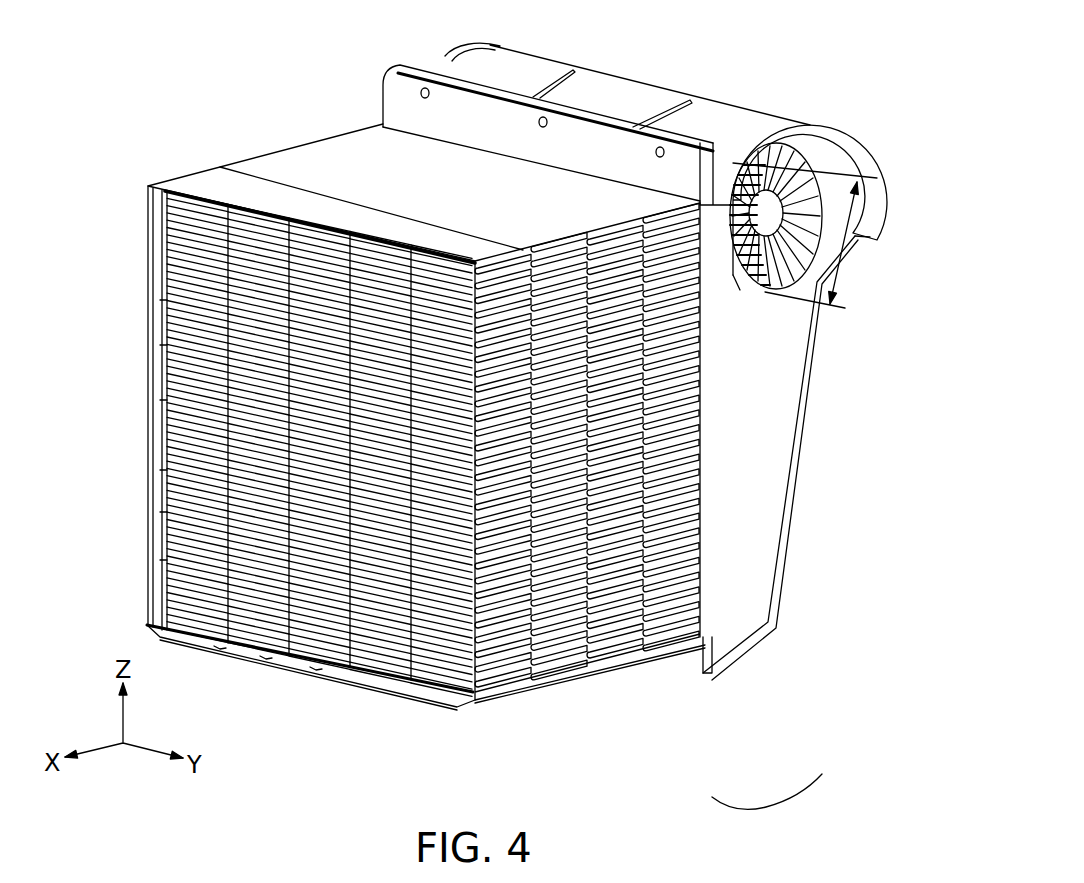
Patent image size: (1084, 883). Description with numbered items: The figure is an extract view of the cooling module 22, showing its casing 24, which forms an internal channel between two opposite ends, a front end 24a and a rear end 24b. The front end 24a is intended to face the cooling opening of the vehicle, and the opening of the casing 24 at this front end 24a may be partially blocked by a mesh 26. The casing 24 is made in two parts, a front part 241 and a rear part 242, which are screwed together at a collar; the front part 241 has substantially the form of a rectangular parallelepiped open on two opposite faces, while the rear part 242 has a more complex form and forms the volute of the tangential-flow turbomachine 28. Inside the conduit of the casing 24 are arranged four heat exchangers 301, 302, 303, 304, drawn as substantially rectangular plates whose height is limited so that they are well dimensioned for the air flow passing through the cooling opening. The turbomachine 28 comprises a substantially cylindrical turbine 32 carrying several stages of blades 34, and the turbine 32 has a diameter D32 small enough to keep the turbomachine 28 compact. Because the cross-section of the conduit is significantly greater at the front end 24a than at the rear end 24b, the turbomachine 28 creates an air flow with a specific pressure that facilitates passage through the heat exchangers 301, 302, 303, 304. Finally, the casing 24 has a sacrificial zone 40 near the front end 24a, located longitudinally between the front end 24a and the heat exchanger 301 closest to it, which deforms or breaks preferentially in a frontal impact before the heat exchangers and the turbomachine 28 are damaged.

The cooling module 22 is at (255, 110).
The sacrificial zone 40 is at (220, 177).
The mesh 26 is at (163, 362).
The front end 24a is at (140, 435).
The rear end 24b is at (880, 283).
The tangential-flow turbomachine 28 is at (863, 335).
The turbine 32 is at (745, 293).
The blades 34 is at (735, 285).
The diameter of the turbine D32 is at (837, 262).
The first heat exchanger 301 is at (492, 677).
The second heat exchanger 302 is at (547, 663).
The third heat exchanger 303 is at (613, 657).
The fourth heat exchanger 304 is at (673, 632).
The front part of the casing 241 is at (577, 668).
The rear part of the casing 242 is at (737, 635).
The casing 24 is at (767, 807).